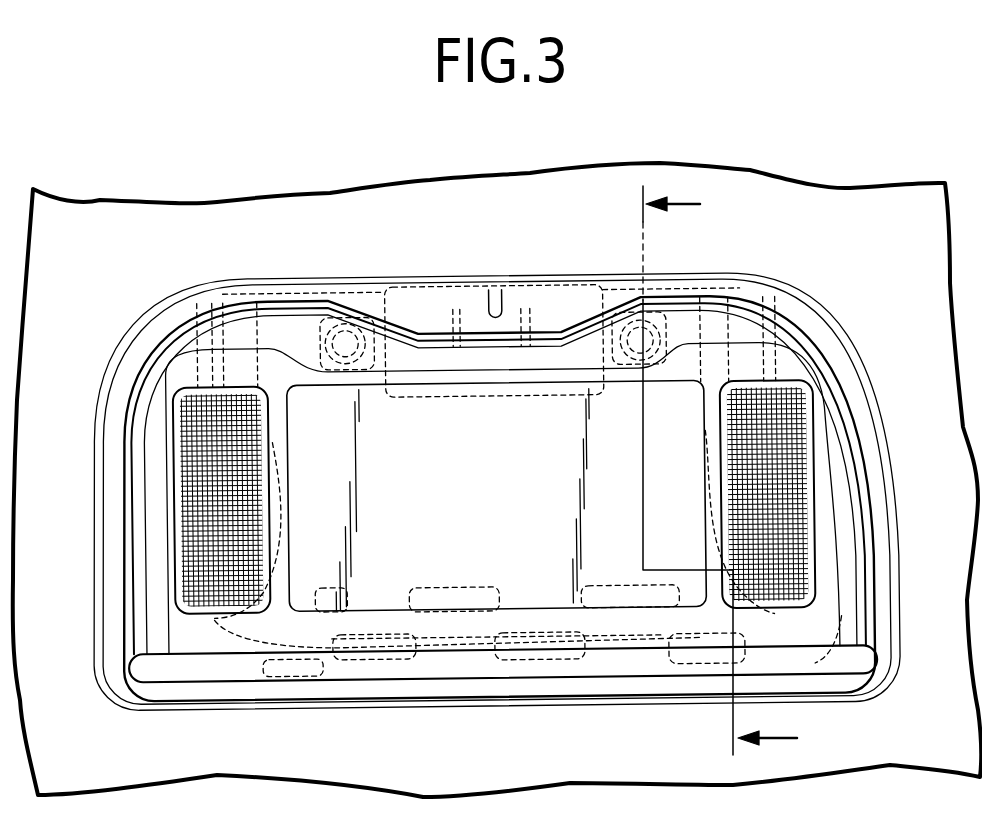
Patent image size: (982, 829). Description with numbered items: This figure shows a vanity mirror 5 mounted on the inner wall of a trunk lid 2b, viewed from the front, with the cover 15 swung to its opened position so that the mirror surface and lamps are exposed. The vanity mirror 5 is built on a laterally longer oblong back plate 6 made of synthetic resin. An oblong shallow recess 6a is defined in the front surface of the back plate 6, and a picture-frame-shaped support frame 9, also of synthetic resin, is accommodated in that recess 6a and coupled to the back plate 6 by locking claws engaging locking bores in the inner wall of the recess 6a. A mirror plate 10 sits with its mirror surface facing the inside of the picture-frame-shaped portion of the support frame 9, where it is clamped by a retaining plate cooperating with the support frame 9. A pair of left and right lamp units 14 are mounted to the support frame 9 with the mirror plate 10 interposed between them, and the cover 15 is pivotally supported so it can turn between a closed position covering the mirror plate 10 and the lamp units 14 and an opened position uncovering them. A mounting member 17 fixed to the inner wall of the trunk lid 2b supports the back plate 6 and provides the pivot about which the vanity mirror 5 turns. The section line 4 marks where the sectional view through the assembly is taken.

The trunk lid 2b is at (112, 228).
The section line 4- 4 is at (739, 473).
The vanity mirror 5 is at (831, 292).
The back plate 6 is at (385, 272).
The recess 6a is at (506, 300).
The support frame 9 is at (827, 388).
The mirror plate 10 is at (478, 508).
The lamp unit 14 is at (200, 469).
The cover 15 is at (466, 660).
The mounting member 17 is at (197, 353).